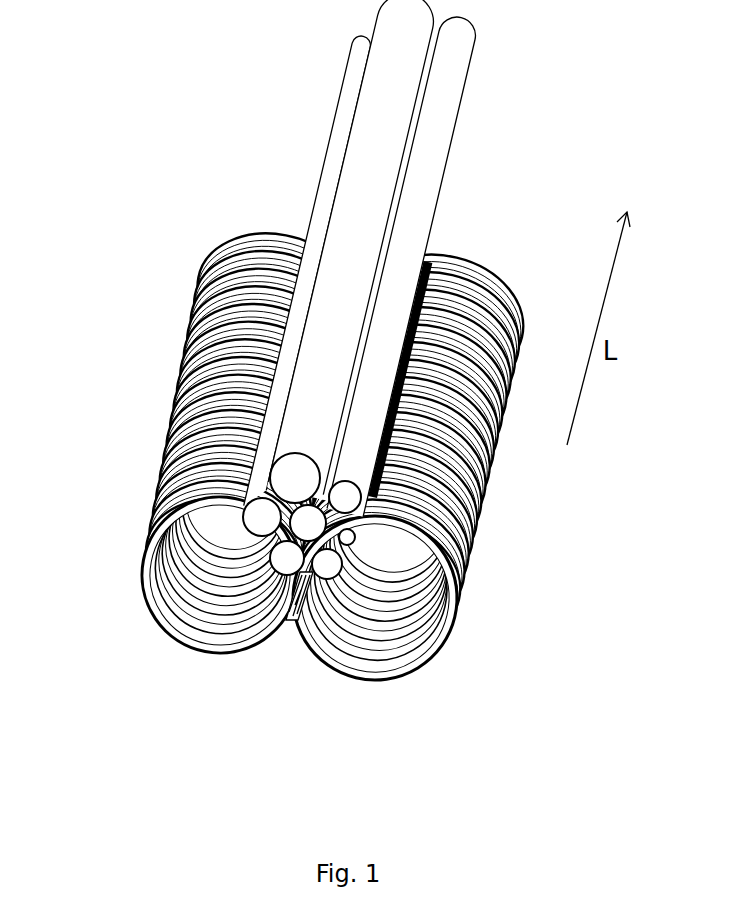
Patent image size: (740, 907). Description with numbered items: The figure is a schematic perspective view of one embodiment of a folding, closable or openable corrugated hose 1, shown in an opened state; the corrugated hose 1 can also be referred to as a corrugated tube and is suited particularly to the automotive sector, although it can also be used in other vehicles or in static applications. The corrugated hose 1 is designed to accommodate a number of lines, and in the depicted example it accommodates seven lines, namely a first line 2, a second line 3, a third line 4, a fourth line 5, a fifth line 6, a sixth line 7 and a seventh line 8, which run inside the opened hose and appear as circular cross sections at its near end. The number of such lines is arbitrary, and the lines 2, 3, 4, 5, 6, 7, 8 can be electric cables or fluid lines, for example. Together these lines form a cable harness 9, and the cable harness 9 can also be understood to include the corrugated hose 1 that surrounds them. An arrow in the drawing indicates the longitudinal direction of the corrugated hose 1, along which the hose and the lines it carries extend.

The corrugated hose 1 is at (327, 384).
The line 2 is at (335, 578).
The line 3 is at (286, 566).
The line 4 is at (260, 522).
The line 5 is at (292, 484).
The line 6 is at (348, 501).
The line 7 is at (347, 537).
The line 8 is at (325, 570).
The cable harness 9 is at (330, 132).